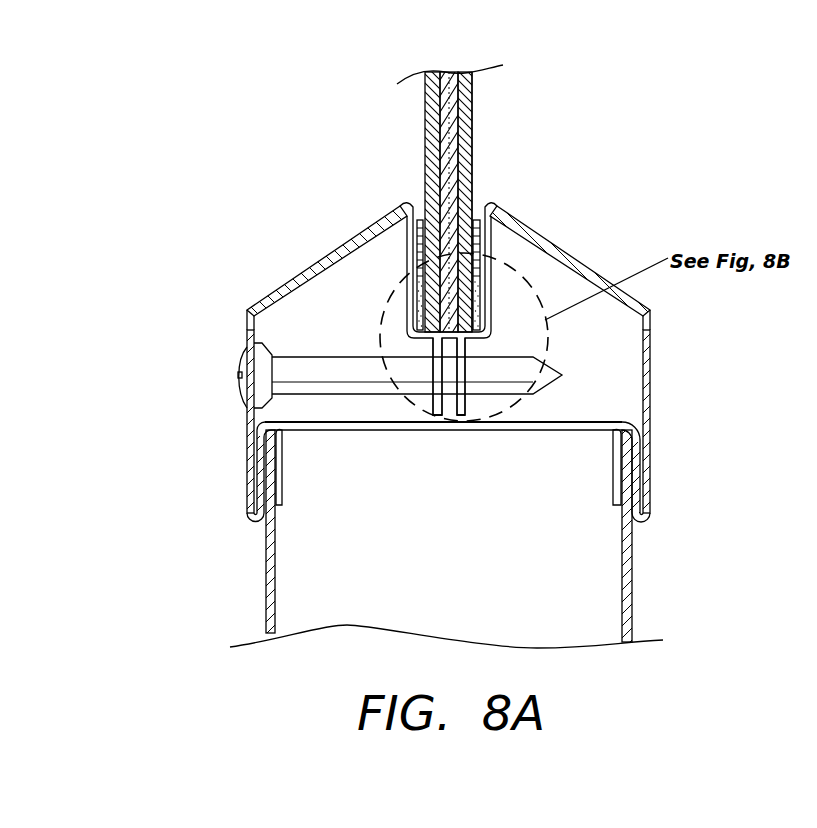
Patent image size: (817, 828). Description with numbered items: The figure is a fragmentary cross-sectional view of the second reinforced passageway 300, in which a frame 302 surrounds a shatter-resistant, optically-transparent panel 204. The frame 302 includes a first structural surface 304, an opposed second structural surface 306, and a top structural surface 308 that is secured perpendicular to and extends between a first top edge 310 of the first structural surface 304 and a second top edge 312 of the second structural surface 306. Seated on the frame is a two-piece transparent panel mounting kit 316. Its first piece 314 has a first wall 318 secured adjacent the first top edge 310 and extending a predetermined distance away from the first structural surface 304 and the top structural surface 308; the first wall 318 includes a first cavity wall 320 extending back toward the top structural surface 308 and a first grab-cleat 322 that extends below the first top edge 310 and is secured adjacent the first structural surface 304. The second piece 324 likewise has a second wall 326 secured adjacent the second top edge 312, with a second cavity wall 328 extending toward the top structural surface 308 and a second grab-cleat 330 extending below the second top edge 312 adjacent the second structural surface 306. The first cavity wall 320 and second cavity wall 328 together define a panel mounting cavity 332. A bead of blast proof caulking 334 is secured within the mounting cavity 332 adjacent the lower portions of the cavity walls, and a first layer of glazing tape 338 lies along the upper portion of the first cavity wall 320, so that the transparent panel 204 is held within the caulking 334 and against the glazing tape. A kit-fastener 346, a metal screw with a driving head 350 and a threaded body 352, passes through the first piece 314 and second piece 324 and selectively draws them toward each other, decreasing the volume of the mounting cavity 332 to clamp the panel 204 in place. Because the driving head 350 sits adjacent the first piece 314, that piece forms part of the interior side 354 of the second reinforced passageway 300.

The transparent panel 204 is at (478, 128).
The second reinforced passageway 300 is at (463, 321).
The panel mounting cavity 332 is at (413, 197).
The first cavity wall 320 is at (400, 212).
The first piece 314 is at (336, 242).
The first layer of glazing tape 338 is at (478, 218).
The second cavity wall 328 is at (488, 238).
The second piece 324 is at (568, 238).
The bead of blast proof caulking 334 is at (472, 308).
The first wall 318 is at (247, 308).
The kit-fastener 346 is at (356, 356).
The driving head 350 is at (240, 368).
The second wall 326 is at (650, 310).
The two-piece transparent panel mounting kit 316 is at (670, 412).
The interior side 354 is at (240, 437).
The threaded body 352 is at (490, 405).
The second top edge 312 is at (610, 432).
The first top edge 310 is at (283, 432).
The top structural surface 308 is at (335, 420).
The second grab-cleat 330 is at (645, 528).
The first grab-cleat 322 is at (262, 525).
The frame 302 is at (472, 539).
The first structural surface 304 is at (267, 598).
The second structural surface 306 is at (632, 620).